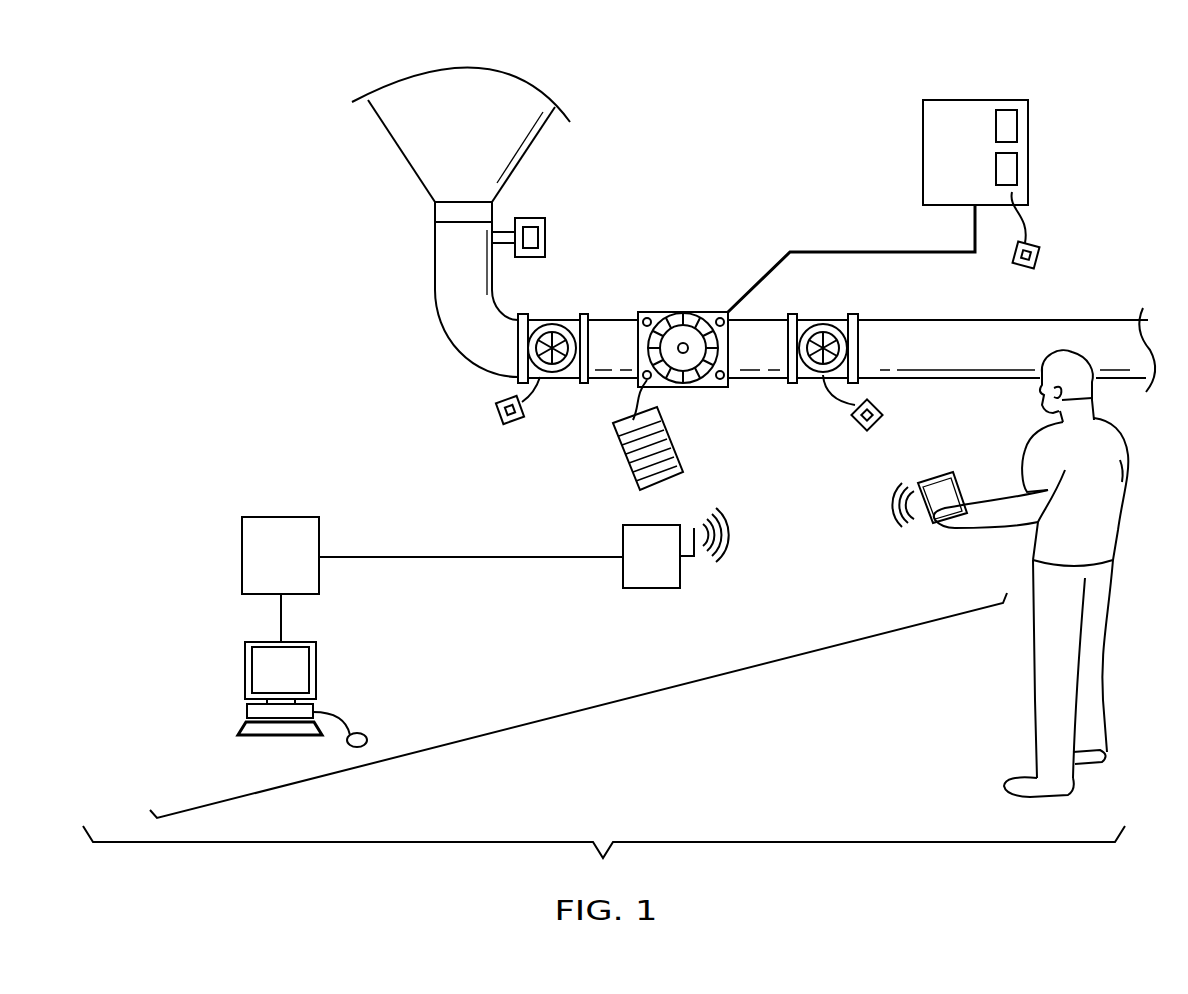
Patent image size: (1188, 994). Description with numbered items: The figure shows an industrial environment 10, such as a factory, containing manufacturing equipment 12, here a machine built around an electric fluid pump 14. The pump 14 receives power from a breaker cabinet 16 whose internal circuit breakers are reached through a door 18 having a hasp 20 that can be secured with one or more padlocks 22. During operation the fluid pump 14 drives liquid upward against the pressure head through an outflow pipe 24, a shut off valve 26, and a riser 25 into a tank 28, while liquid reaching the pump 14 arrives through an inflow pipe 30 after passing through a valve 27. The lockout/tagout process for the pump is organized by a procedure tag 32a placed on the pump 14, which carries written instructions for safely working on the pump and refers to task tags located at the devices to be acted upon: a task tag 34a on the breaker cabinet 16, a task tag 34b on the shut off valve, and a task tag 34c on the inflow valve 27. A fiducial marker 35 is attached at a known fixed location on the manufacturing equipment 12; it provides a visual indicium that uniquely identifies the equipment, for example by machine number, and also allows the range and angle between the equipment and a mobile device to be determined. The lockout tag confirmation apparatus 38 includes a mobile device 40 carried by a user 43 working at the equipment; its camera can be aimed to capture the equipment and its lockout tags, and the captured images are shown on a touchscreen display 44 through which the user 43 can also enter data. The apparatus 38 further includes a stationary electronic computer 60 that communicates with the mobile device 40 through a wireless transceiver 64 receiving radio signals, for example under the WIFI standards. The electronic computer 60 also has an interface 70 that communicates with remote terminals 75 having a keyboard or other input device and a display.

The industrial environment 10 is at (1132, 109).
The manufacturing equipment 12 is at (744, 114).
The electric fluid pump 14 is at (672, 322).
The breaker cabinet 16 is at (976, 126).
The door 18 is at (975, 152).
The hasp 20 is at (1017, 125).
The padlock 22 is at (1017, 168).
The outflow pipe 24 is at (618, 325).
The riser 25 is at (435, 258).
The shut off valve 26 is at (533, 340).
The valve 27 is at (802, 353).
The tank 28 is at (415, 140).
The inflow pipe 30 is at (1112, 332).
The procedure tag 32a is at (618, 460).
The task tag 34a is at (1020, 270).
The task tag 34b is at (497, 405).
The task tag 34c is at (858, 430).
The fiducial marker 35 is at (530, 218).
The lockout tag confirmation apparatus 38 is at (578, 705).
The mobile device 40 is at (913, 502).
The user 43 is at (1107, 525).
The touchscreen display 44 is at (941, 486).
The electronic computer 60 is at (267, 572).
The wireless transceiver 64 is at (650, 525).
The interface 70 is at (281, 625).
The remote terminal 75 is at (238, 645).